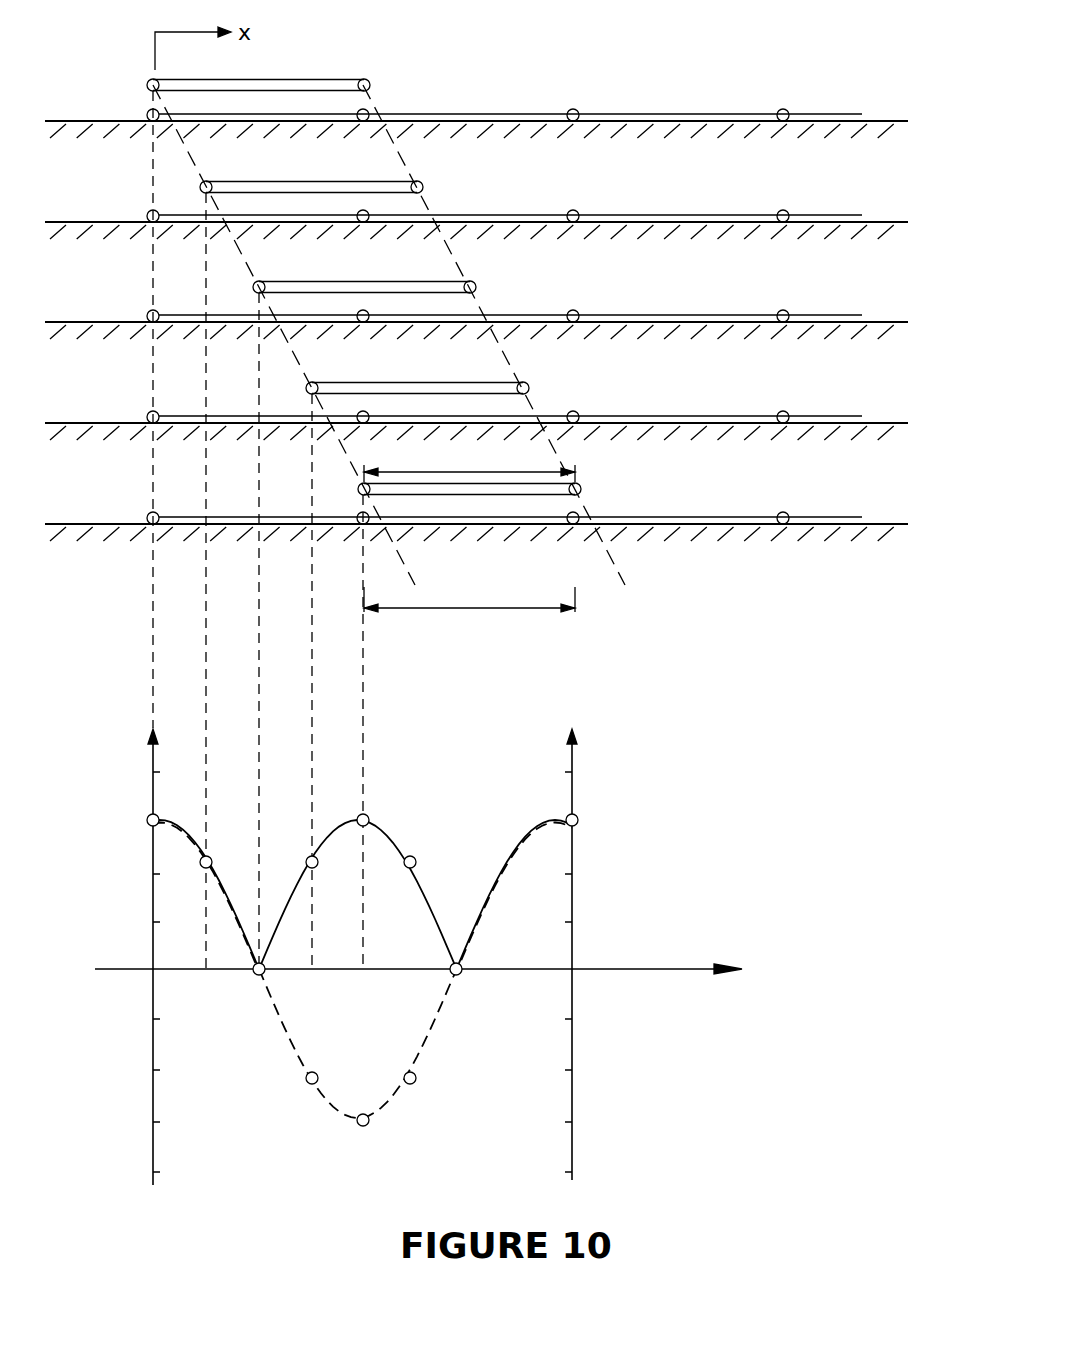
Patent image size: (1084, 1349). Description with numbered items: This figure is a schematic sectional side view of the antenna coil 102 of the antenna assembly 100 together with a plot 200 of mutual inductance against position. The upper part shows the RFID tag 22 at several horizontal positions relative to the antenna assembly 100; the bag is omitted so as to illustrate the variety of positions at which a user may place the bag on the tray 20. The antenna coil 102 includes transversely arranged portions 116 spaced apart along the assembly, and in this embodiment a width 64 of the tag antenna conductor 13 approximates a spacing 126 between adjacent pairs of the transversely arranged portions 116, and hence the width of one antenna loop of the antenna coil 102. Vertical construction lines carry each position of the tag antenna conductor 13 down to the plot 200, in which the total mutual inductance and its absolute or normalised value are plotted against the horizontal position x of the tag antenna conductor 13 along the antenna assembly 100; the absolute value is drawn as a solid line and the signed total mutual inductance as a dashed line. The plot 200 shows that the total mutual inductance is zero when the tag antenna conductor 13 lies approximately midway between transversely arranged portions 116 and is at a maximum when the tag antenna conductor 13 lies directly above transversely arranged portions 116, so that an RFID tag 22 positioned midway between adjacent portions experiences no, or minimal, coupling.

The tag antenna conductor 13 is at (150, 86).
The RFID tag 22 is at (275, 83).
The transversely arranged portions 116 is at (372, 113).
The antenna assembly 100 is at (446, 263).
The antenna coil 102 is at (835, 115).
The tray 20 is at (895, 120).
The width 64 is at (469, 461).
The spacing 126 is at (469, 618).
The plot 200 is at (616, 913).